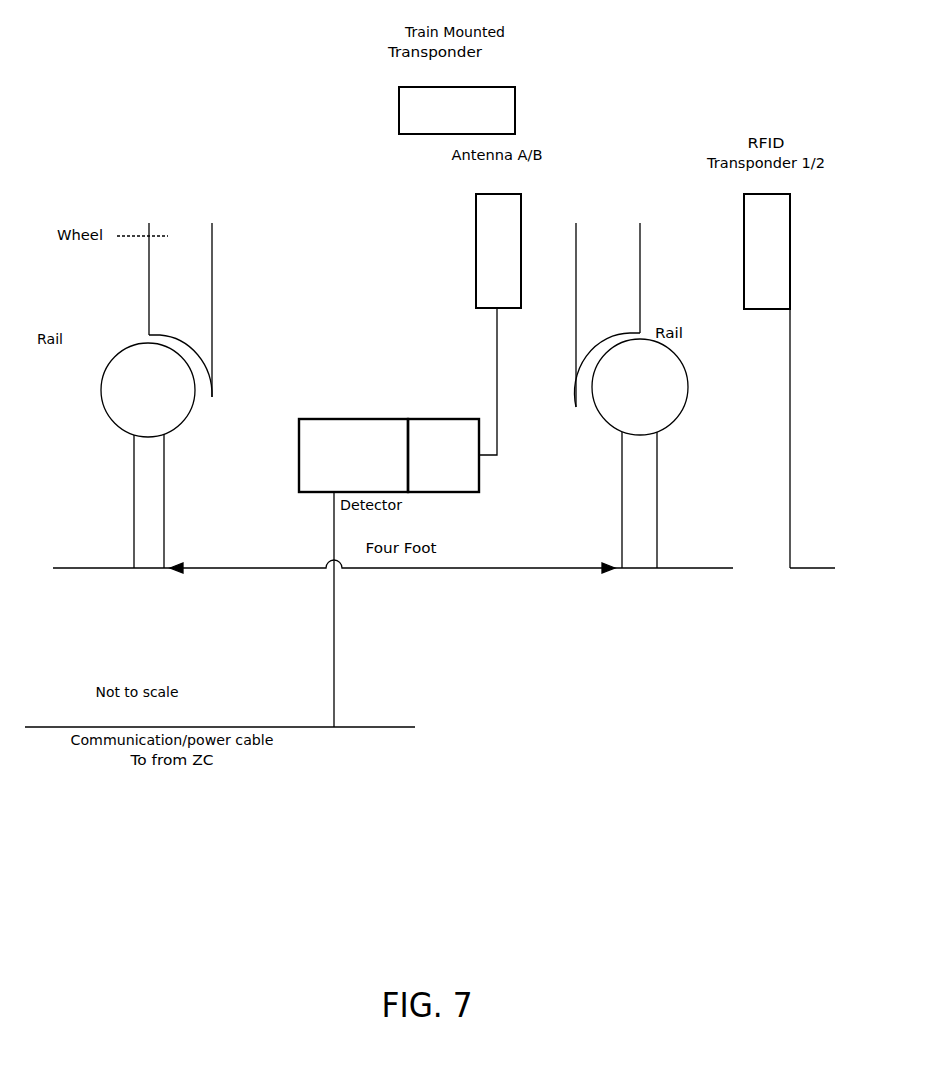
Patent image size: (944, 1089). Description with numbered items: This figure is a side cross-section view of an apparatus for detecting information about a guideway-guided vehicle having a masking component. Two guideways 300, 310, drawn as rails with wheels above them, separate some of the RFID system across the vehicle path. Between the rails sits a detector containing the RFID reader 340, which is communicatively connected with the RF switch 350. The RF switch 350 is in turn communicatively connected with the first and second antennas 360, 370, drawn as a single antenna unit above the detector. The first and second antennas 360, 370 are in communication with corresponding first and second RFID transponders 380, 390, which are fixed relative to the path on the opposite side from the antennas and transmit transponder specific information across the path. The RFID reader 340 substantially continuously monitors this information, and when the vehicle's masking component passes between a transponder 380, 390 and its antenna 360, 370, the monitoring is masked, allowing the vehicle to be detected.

The guideway 300 is at (620, 408).
The guideway 310 is at (130, 407).
The RFID reader 340 is at (323, 419).
The RF switch 350 is at (421, 419).
The first antenna 360 is at (453, 319).
The second antenna 370 is at (476, 240).
The first RFID transponder 380 is at (723, 379).
The second RFID transponder 390 is at (744, 247).